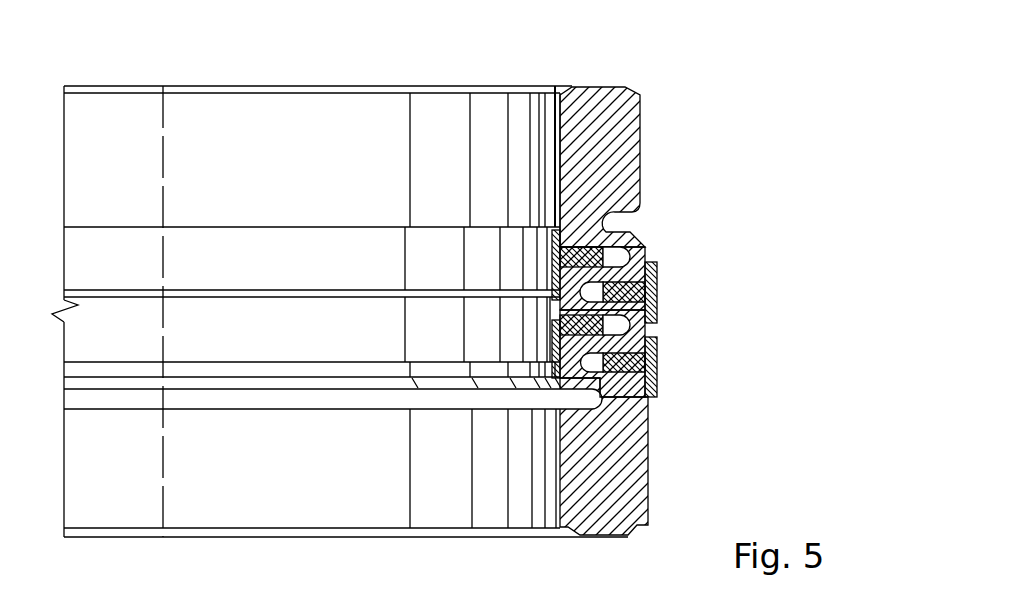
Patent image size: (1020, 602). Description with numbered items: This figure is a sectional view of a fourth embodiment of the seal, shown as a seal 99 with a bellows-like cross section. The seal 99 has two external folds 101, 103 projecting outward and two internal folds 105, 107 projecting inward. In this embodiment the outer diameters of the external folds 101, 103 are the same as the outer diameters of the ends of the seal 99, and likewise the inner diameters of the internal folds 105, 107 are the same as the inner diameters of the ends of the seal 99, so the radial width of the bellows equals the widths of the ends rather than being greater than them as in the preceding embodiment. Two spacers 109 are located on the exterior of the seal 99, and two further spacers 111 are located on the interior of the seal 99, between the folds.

The seal 99 is at (630, 66).
The external fold 101 is at (633, 245).
The external fold 103 is at (652, 340).
The internal fold 105 is at (575, 278).
The internal fold 107 is at (573, 347).
The spacer 109 is at (650, 280).
The spacer 111 is at (605, 258).